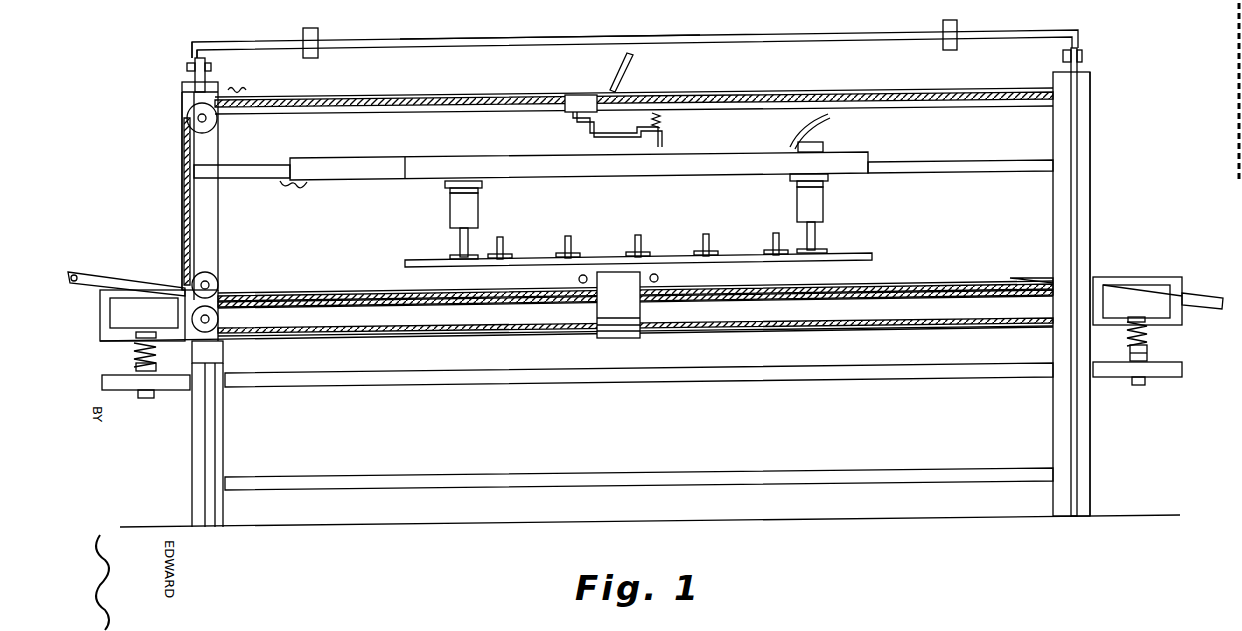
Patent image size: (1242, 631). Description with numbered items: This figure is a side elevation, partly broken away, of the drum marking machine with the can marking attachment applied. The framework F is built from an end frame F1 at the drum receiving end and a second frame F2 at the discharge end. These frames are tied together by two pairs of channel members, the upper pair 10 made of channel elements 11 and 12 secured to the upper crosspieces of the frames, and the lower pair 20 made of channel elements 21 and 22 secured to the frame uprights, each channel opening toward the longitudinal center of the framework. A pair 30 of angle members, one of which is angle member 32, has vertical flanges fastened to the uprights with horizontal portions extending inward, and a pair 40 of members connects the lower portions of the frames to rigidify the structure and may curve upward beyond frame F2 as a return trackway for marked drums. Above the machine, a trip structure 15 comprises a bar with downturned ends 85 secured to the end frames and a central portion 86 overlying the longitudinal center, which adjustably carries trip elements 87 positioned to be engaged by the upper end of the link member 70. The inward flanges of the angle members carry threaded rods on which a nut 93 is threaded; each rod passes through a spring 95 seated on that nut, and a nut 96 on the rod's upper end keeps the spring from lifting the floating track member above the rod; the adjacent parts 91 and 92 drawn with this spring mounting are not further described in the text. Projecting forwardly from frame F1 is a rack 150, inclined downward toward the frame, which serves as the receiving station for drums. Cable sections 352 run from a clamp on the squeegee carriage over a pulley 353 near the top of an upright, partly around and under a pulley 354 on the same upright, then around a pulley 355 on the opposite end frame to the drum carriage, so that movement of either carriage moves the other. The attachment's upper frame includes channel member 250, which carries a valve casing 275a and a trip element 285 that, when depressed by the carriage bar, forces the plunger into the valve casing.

The pair of channel members 10 is at (246, 74).
The channel element 11 is at (186, 106).
The channel element 12 is at (403, 114).
The trip structure 15 is at (519, 31).
The pair of channel members 20 is at (298, 188).
The channel element 21 is at (262, 184).
The channel element 22 is at (358, 158).
The pair of angle members 30 is at (990, 382).
The angle member 32 is at (458, 380).
The pair of members 40 is at (940, 484).
The link member 70 is at (636, 62).
The downturned ends 85 is at (188, 49).
The central portion 86 is at (762, 20).
The trip elements 87 is at (320, 34).
The support bar 91 is at (1146, 378).
The nut 92 is at (1148, 355).
The nut 93 is at (1128, 348).
The spring 95 is at (1148, 340).
The nut 96 is at (1134, 316).
The rack 150 is at (1212, 297).
The channel member 250 is at (756, 150).
The valve casing 275a is at (824, 146).
The trip element 285 is at (822, 126).
The cable sections 352 is at (440, 107).
The pulley 353 is at (213, 125).
The pulley 354 is at (216, 282).
The pulley 355 is at (220, 319).
The framework F is at (1098, 109).
The end frame F1 is at (1093, 197).
The end frame F2 is at (187, 229).